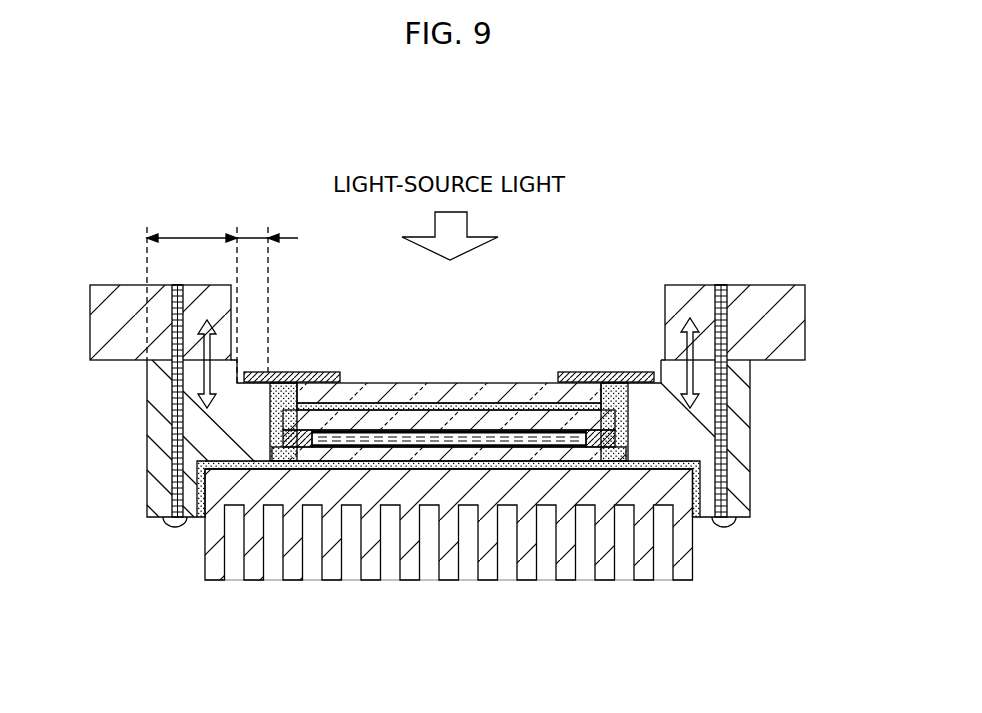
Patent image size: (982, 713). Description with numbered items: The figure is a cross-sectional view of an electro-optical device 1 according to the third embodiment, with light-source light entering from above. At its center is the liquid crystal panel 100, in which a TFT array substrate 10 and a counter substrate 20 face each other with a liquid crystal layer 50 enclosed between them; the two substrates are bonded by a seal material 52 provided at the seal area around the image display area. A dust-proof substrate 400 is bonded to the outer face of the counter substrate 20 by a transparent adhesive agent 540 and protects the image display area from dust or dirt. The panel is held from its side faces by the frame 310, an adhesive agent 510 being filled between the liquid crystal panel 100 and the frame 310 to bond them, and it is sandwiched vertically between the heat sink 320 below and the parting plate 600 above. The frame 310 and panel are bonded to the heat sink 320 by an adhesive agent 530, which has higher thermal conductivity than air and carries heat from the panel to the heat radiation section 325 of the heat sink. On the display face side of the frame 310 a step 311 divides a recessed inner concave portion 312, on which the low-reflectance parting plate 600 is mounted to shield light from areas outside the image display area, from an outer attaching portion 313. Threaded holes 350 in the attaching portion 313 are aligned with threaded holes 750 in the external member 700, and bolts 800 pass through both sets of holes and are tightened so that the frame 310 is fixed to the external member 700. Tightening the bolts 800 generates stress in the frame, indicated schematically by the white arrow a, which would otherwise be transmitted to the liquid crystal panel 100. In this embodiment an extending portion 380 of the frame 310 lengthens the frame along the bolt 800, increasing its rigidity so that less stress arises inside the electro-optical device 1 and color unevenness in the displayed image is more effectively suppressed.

The electro-optical device 1 is at (733, 212).
The TFT array substrate 10 is at (403, 454).
The counter substrate 20 is at (485, 424).
The liquid crystal layer 50 is at (445, 438).
The seal material 52 is at (306, 431).
The liquid crystal panel 100 is at (449, 512).
The frame 310 is at (748, 412).
The step 311 is at (246, 371).
The concave portion 312 is at (250, 233).
The attaching portion 313 is at (193, 233).
The heat sink 320 is at (692, 583).
The heat radiation section 325 is at (371, 594).
The threaded hole 350 is at (174, 411).
The extending portion 380 is at (157, 513).
The dust-proof substrate 400 is at (496, 386).
The adhesive agent 510 is at (616, 394).
The adhesive agent 530 is at (690, 465).
The transparent adhesive agent 540 is at (462, 404).
The parting plate 600 is at (578, 372).
The external member 700 is at (117, 290).
The threaded hole 750 is at (172, 322).
The bolt 800 is at (175, 479).
The white arrow a is at (212, 315).